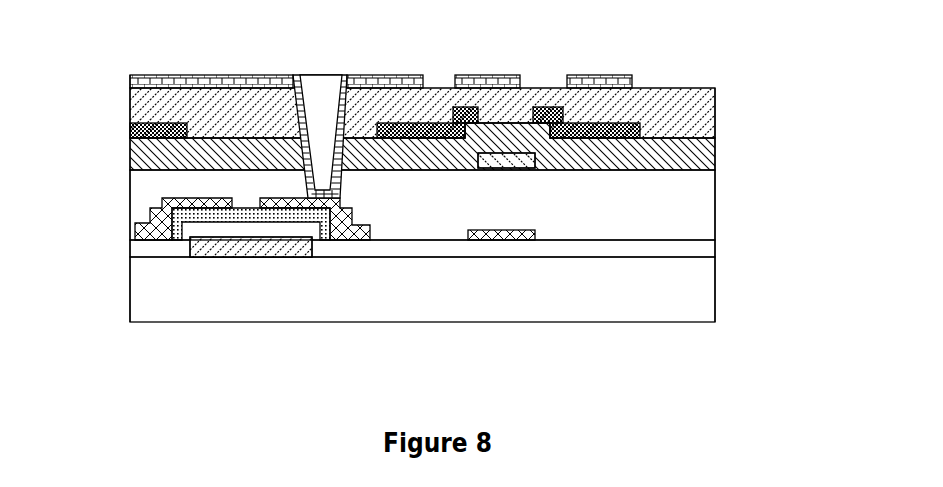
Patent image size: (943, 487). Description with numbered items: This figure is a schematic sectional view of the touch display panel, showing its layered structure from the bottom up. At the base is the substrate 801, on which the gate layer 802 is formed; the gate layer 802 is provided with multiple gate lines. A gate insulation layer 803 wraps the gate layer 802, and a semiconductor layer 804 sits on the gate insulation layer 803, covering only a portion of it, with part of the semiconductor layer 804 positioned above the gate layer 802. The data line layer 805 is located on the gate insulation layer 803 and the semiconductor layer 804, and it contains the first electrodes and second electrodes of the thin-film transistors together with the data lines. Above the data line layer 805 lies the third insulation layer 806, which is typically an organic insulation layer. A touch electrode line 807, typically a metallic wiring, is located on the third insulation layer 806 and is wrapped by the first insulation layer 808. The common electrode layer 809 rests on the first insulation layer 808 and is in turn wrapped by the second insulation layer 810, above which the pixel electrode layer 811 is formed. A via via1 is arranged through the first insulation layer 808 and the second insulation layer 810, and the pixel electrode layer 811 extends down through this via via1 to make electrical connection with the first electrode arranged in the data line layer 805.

The substrate 801 is at (422, 289).
The gate layer 802 is at (248, 247).
The gate insulation layer 803 is at (160, 250).
The semiconductor layer 804 is at (158, 237).
The data line layer 805 is at (173, 231).
The third insulation layer 806 is at (150, 190).
The touch electrode line 807 is at (535, 163).
The first insulation layer 808 is at (663, 145).
The common electrode layer 809 is at (640, 120).
The second insulation layer 810 is at (655, 98).
The pixel electrode layer 811 is at (602, 82).
The via via1 is at (322, 120).